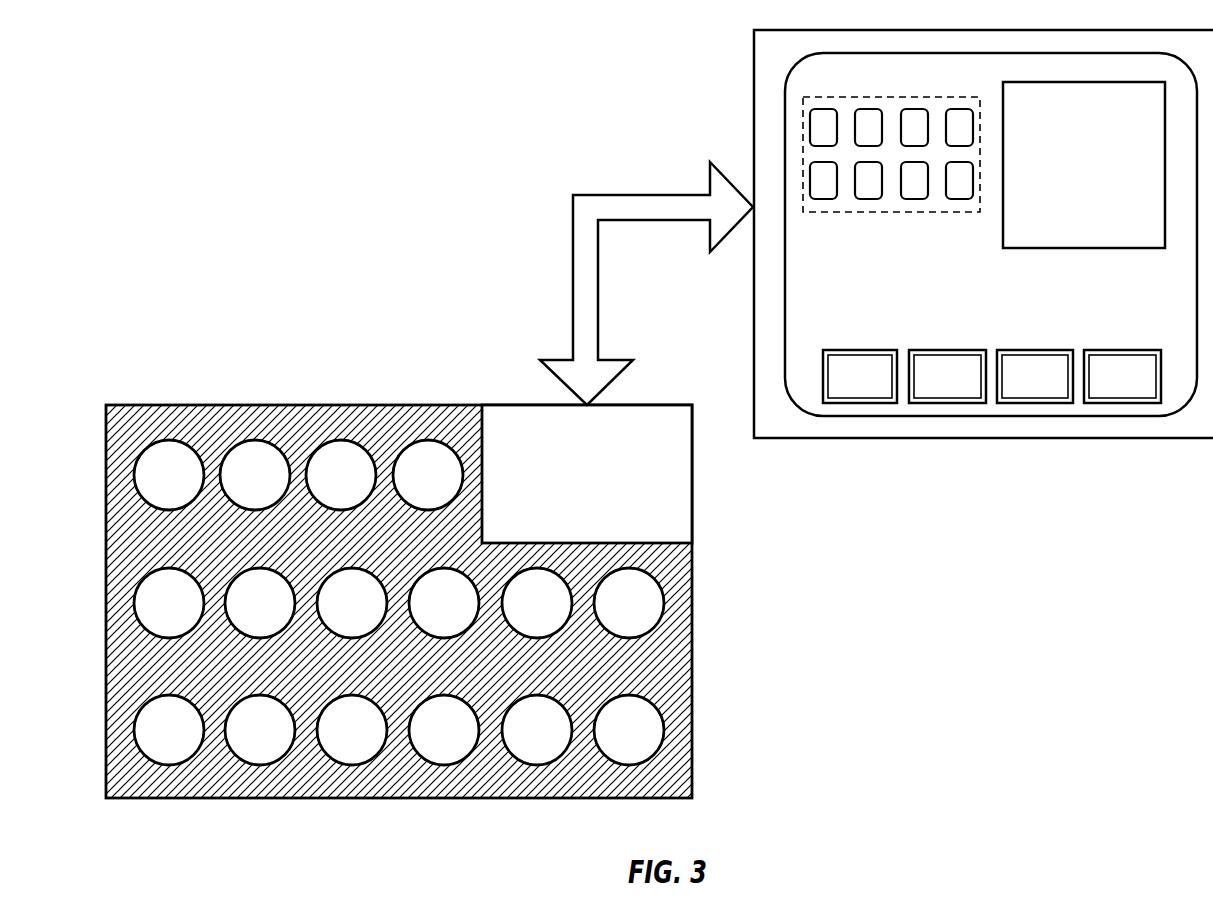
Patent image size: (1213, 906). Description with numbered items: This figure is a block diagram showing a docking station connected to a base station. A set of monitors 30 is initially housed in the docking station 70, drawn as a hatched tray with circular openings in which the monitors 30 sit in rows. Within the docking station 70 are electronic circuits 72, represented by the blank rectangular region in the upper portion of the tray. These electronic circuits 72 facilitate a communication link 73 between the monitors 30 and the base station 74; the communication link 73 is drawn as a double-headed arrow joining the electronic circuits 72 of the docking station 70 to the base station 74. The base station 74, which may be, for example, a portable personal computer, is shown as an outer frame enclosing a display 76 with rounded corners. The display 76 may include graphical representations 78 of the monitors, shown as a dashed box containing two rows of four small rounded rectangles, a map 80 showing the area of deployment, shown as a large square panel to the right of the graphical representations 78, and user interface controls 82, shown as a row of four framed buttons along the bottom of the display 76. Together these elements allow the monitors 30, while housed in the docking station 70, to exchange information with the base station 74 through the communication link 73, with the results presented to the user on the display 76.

The monitors 30 is at (342, 440).
The docking station 70 is at (692, 662).
The electronic circuits 72 is at (673, 508).
The communication link 73 is at (572, 272).
The base station 74 is at (1112, 438).
The display 76 is at (808, 412).
The graphical representations 78 is at (867, 110).
The map 80 is at (1086, 82).
The user interface controls 82 is at (947, 403).